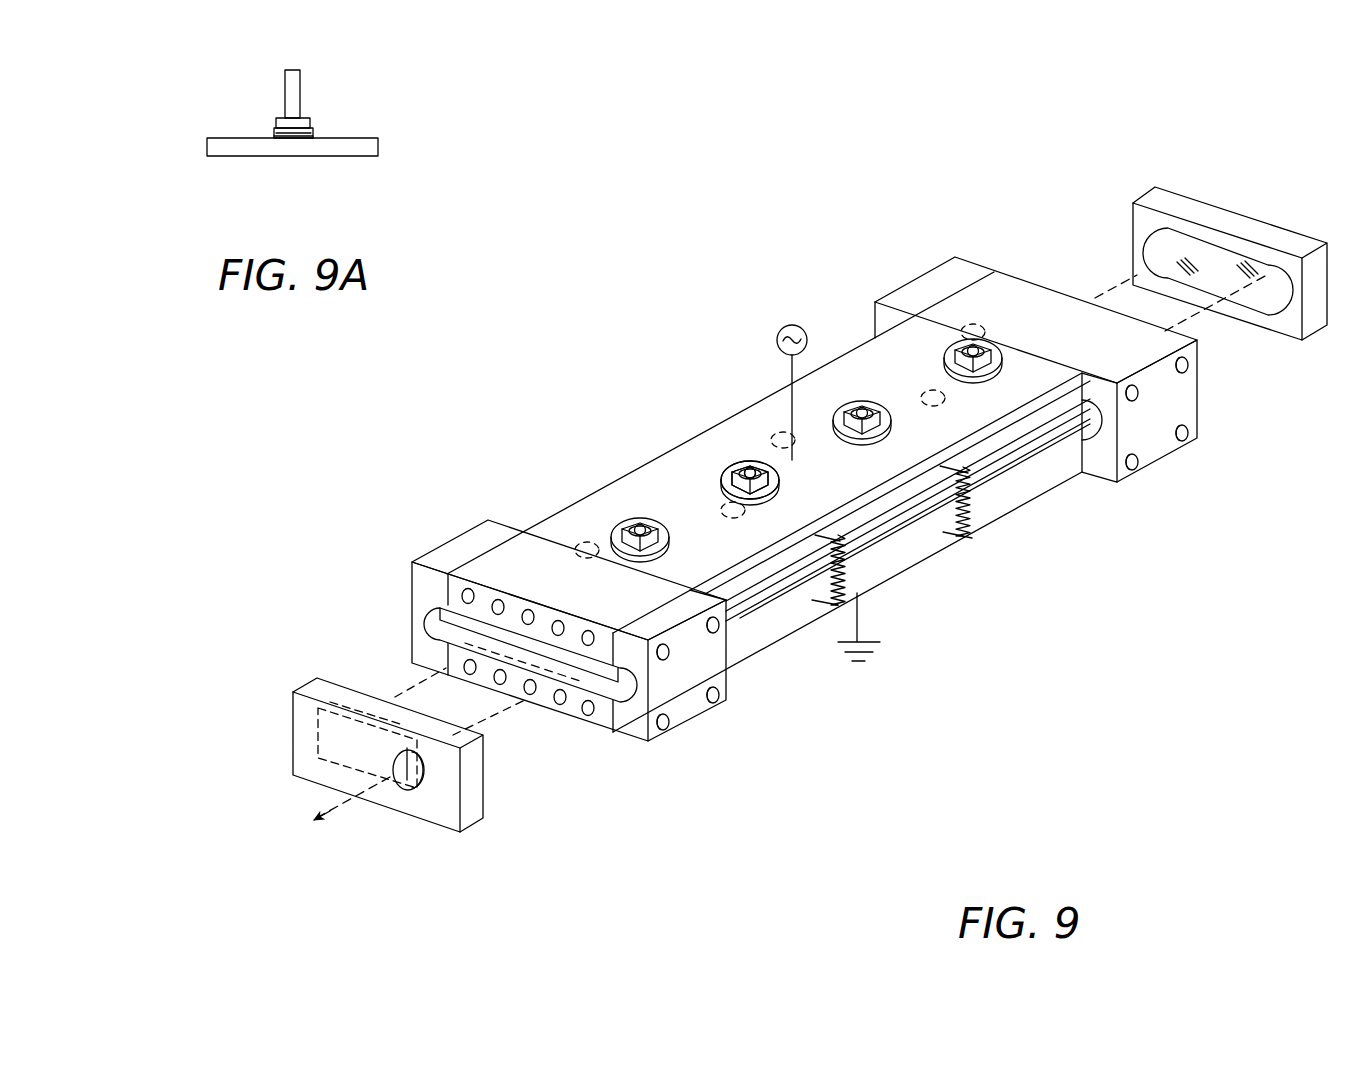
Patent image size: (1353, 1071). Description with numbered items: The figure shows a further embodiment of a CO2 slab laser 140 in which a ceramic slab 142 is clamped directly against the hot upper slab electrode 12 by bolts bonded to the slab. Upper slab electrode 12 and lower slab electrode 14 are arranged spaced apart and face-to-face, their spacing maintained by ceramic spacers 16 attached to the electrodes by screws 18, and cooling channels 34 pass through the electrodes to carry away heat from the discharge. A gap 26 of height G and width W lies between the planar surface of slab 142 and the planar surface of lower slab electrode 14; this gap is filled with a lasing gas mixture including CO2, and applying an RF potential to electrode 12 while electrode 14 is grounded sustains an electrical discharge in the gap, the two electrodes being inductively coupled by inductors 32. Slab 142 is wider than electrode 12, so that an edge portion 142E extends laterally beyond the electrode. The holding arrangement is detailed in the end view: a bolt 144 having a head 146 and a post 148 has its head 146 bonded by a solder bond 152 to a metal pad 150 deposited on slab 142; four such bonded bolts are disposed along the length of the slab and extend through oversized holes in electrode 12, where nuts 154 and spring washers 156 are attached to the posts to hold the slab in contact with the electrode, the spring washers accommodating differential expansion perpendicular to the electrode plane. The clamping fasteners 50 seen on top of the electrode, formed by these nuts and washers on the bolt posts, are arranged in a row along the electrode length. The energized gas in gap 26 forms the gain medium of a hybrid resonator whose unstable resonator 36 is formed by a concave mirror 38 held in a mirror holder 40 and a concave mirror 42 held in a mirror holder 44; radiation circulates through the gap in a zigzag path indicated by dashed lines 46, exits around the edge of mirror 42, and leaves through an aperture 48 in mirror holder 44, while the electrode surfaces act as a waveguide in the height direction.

In FIG. 9, the upper slab electrode 12 is at (585, 496).
In FIG. 9, the lower slab electrode 14 is at (922, 564).
In FIG. 9, the ceramic spacer 16 is at (450, 539).
In FIG. 9, the screw 18 is at (720, 697).
In FIG. 9, the gap 26 is at (770, 600).
In FIG. 9, the inductor 32 is at (972, 526).
In FIG. 9, the channel 34 is at (498, 599).
In FIG. 9, the unstable resonator 36 is at (844, 494).
In FIG. 9, the concave mirror 38 is at (1153, 250).
In FIG. 9, the mirror holder 40 is at (1178, 202).
In FIG. 9, the concave mirror 42 is at (392, 768).
In FIG. 9, the mirror holder 44 is at (312, 684).
In FIG. 9, the dashed lines 46 is at (403, 692).
In FIG. 9, the aperture 48 is at (414, 790).
In FIG. 9, the tuning nut 50 is at (765, 428).
In FIG. 9, the slab laser 140 is at (817, 538).
In FIG. 9A, the slab 142 is at (362, 160).
In FIG. 9, the slab 142 is at (874, 538).
In FIG. 9, the edge portion 142E is at (1017, 442).
In FIG. 9A, the bolt 144 is at (276, 106).
In FIG. 9A, the head 146 is at (306, 121).
In FIG. 9A, the post 148 is at (298, 80).
In FIG. 9, the post 148 is at (742, 467).
In FIG. 9A, the metal pad 150 is at (283, 133).
In FIG. 9A, the solder bond 152 is at (313, 131).
In FIG. 9, the nut 154 is at (722, 475).
In FIG. 9, the spring washer 156 is at (721, 482).